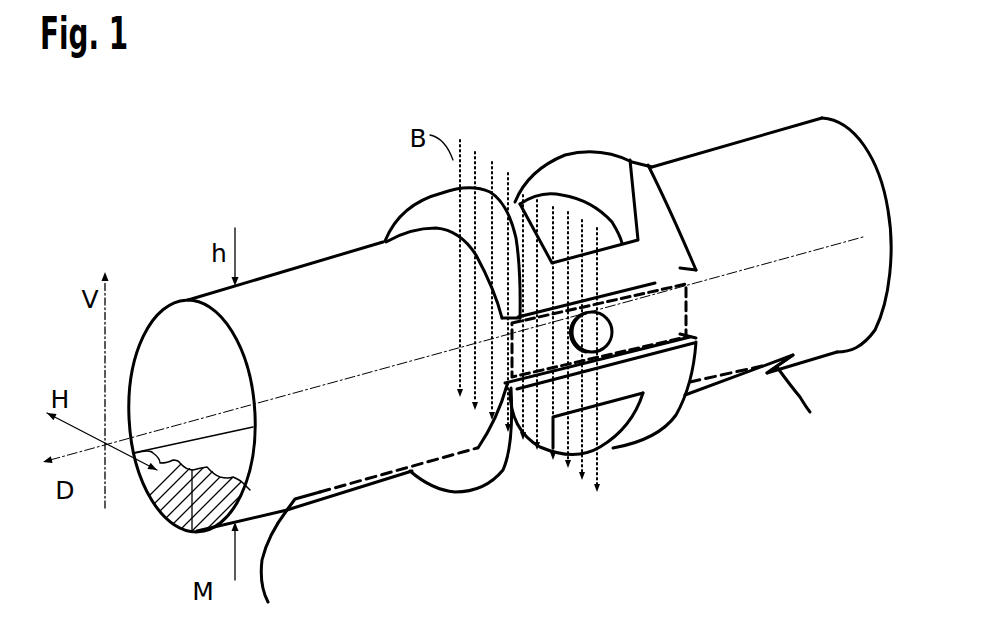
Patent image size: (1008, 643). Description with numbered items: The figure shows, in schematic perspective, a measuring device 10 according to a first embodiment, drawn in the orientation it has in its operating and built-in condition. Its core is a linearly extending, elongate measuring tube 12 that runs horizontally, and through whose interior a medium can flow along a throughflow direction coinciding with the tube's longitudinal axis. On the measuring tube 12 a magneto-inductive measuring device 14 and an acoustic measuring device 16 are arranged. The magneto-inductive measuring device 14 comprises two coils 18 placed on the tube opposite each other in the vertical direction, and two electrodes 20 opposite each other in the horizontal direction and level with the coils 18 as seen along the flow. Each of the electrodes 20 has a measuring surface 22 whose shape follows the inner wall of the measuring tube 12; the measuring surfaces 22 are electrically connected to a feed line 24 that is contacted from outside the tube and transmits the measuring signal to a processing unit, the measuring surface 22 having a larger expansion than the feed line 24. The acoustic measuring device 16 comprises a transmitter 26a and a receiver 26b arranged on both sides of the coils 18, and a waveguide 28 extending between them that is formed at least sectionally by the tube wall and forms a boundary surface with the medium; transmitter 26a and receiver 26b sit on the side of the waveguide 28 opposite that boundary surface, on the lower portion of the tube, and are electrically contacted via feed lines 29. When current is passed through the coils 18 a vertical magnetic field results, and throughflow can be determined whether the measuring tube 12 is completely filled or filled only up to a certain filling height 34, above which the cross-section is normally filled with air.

The measuring device 10 is at (130, 173).
The measuring tube 12 is at (775, 147).
The magneto-inductive measuring device 14 is at (491, 110).
The acoustic measuring device 16 is at (355, 518).
The coils 18 is at (585, 160).
The electrodes 20 is at (634, 330).
The measuring surface 22 is at (652, 302).
The feed line 24 is at (603, 352).
The transmitter 26a is at (300, 510).
The receiver 26b is at (780, 367).
The waveguide 28 is at (396, 481).
The feed lines 29 is at (265, 585).
The filling height 34 is at (163, 519).